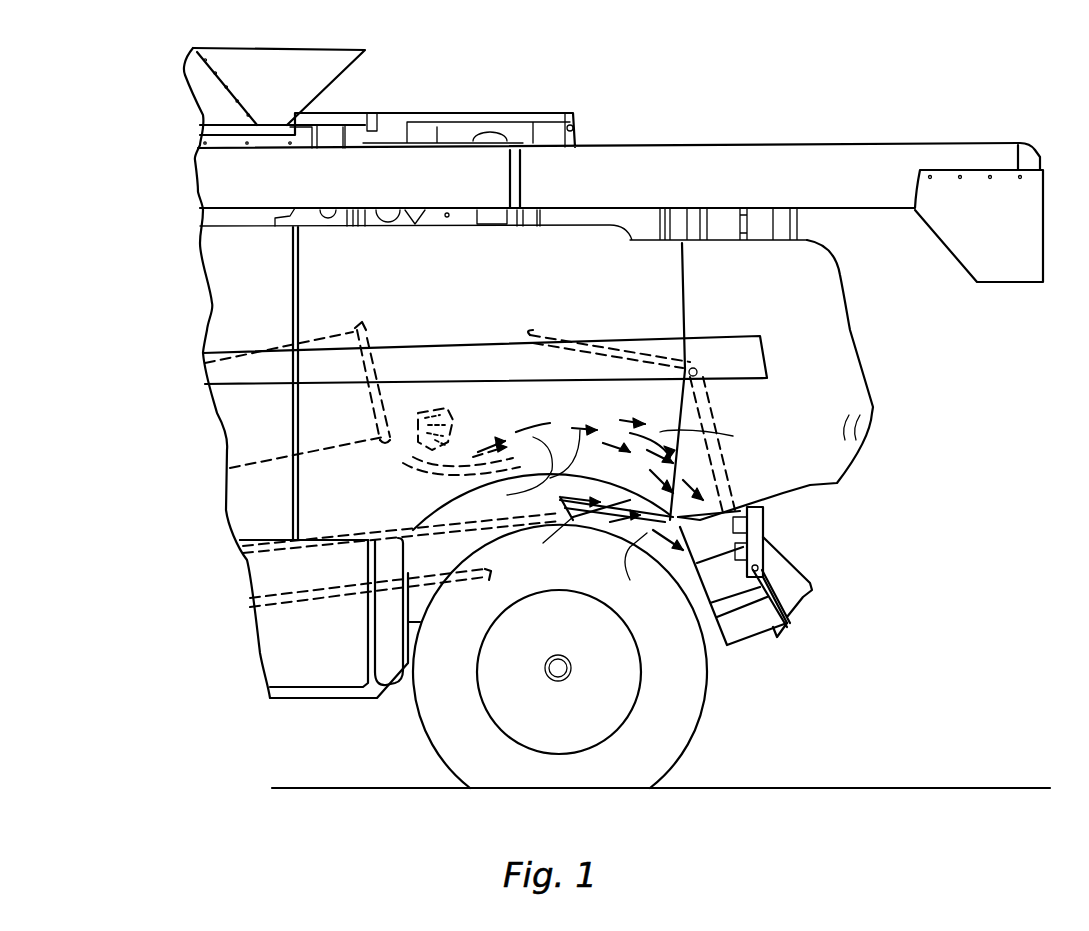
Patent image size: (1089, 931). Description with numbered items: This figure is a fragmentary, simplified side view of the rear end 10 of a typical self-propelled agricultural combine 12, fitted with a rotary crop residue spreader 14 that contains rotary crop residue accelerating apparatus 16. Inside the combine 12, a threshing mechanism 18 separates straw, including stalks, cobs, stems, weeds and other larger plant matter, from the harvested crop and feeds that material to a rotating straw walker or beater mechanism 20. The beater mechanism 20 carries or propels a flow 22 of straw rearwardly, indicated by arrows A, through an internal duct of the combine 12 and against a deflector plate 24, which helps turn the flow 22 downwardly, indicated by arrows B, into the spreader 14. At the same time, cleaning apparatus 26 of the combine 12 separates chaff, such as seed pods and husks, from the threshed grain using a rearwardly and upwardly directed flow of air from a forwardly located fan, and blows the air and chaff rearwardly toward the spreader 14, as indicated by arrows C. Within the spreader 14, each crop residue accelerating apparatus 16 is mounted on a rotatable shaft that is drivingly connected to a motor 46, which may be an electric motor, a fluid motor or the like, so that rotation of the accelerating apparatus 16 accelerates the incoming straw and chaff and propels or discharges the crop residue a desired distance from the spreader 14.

The rear end 10 is at (850, 332).
The agricultural combine 12 is at (190, 598).
The rotary crop residue spreader 14 is at (773, 627).
The rotary crop residue accelerating apparatus 16 is at (760, 637).
The threshing mechanism 18 is at (340, 330).
The straw walker or beater mechanism 20 is at (433, 410).
The flow of straw 22 is at (520, 427).
The deflector plate 24 is at (713, 407).
The cleaning apparatus 26 is at (267, 540).
The motor 46 is at (766, 555).